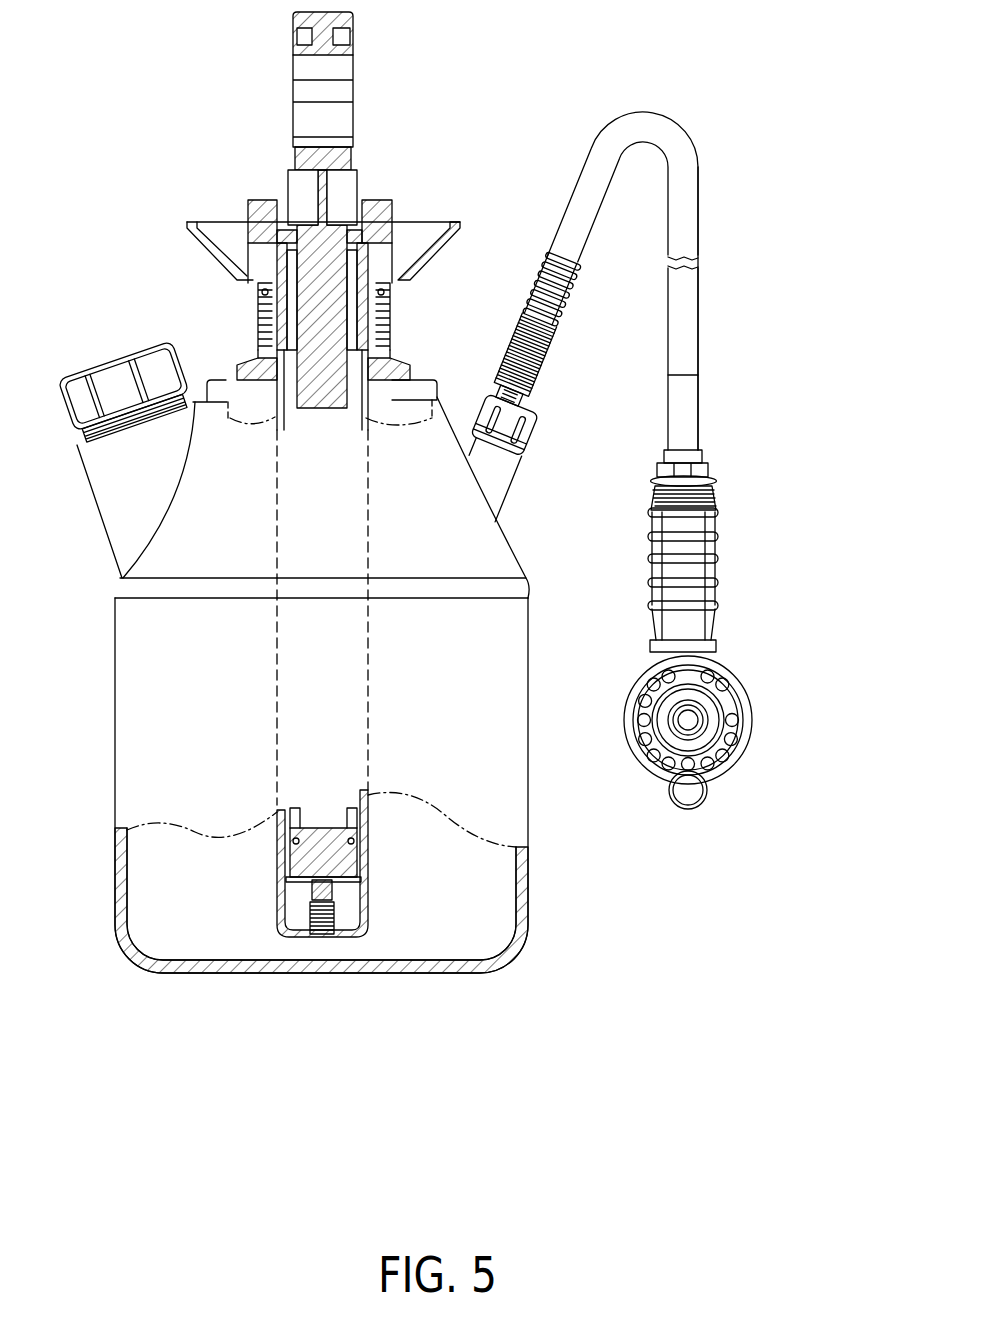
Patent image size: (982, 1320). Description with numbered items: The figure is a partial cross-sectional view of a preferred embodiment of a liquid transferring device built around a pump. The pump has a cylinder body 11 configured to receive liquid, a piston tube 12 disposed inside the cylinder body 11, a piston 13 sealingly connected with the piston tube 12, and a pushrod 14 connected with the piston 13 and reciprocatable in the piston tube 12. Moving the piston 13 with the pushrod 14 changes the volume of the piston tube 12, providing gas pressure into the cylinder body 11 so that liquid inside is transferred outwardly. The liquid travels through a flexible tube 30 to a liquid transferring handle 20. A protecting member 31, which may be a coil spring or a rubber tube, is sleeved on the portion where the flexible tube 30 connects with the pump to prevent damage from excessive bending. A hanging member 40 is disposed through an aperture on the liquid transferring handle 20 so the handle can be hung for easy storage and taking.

The cylinder body 11 is at (140, 697).
The piston tube 12 is at (365, 898).
The piston 13 is at (355, 832).
The pushrod 14 is at (317, 322).
The liquid transferring handle 20 is at (732, 553).
The flexible tube 30 is at (668, 133).
The protecting member 31 is at (548, 362).
The hanging member 40 is at (695, 808).